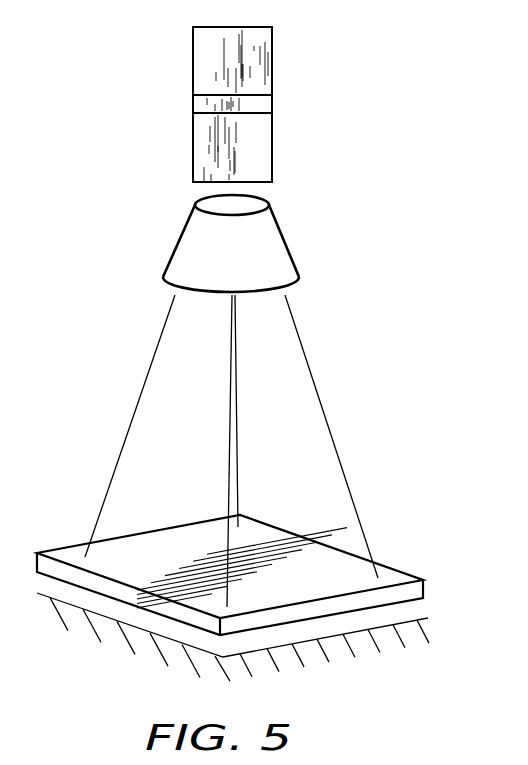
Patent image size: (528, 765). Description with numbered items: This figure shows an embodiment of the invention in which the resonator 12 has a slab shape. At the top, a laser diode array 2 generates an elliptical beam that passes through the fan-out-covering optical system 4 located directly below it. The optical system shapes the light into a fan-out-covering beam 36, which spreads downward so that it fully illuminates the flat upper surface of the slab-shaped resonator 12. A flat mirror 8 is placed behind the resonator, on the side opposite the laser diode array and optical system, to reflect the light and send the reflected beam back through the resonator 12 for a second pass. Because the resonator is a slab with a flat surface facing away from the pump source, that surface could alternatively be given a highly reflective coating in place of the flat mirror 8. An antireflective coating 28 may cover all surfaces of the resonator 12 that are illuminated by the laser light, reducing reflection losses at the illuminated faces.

The laser diode array 2 is at (260, 68).
The fan-out-covering optical system 4 is at (277, 243).
The fan-out-covering beam 36 is at (312, 412).
The resonator 12 is at (166, 525).
The antireflective coating 28 is at (338, 553).
The flat mirror 8 is at (318, 668).